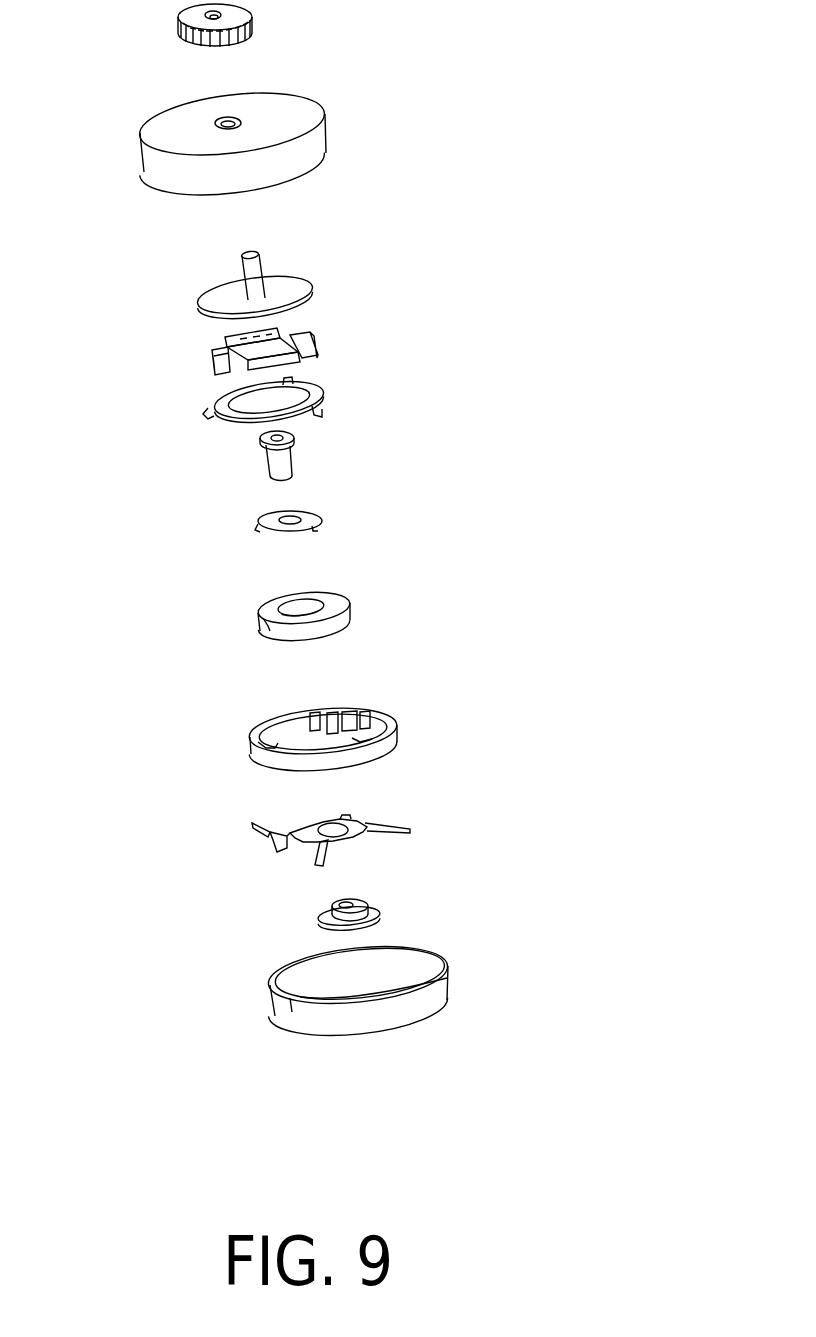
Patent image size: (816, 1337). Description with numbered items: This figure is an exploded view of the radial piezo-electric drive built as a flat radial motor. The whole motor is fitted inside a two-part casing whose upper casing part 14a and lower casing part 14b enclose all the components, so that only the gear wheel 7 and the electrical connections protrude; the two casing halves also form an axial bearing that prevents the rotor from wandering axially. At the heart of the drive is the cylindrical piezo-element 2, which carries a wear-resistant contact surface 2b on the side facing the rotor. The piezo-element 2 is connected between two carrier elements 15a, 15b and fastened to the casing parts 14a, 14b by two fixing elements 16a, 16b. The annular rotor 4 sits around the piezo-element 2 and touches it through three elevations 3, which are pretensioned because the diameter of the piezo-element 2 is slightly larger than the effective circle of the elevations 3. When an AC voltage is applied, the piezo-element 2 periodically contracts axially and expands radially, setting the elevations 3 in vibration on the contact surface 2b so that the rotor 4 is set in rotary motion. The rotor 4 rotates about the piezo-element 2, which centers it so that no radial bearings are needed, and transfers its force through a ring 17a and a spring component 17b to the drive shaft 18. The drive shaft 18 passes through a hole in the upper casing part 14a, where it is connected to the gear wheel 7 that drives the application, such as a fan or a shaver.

The gear wheel 7 is at (253, 22).
The casing part 14a is at (187, 120).
The drive shaft 18 is at (280, 293).
The spring component 17b is at (212, 355).
The ring 17a is at (323, 392).
The fixing element 16a is at (293, 467).
The carrier element 15a is at (268, 520).
The piezo-element 2 is at (333, 602).
The contact surface 2b is at (257, 613).
The elevations 3 is at (270, 742).
The rotor 4 is at (380, 735).
The carrier element 15b is at (278, 835).
The fixing element 16b is at (367, 903).
The casing part 14b is at (272, 984).